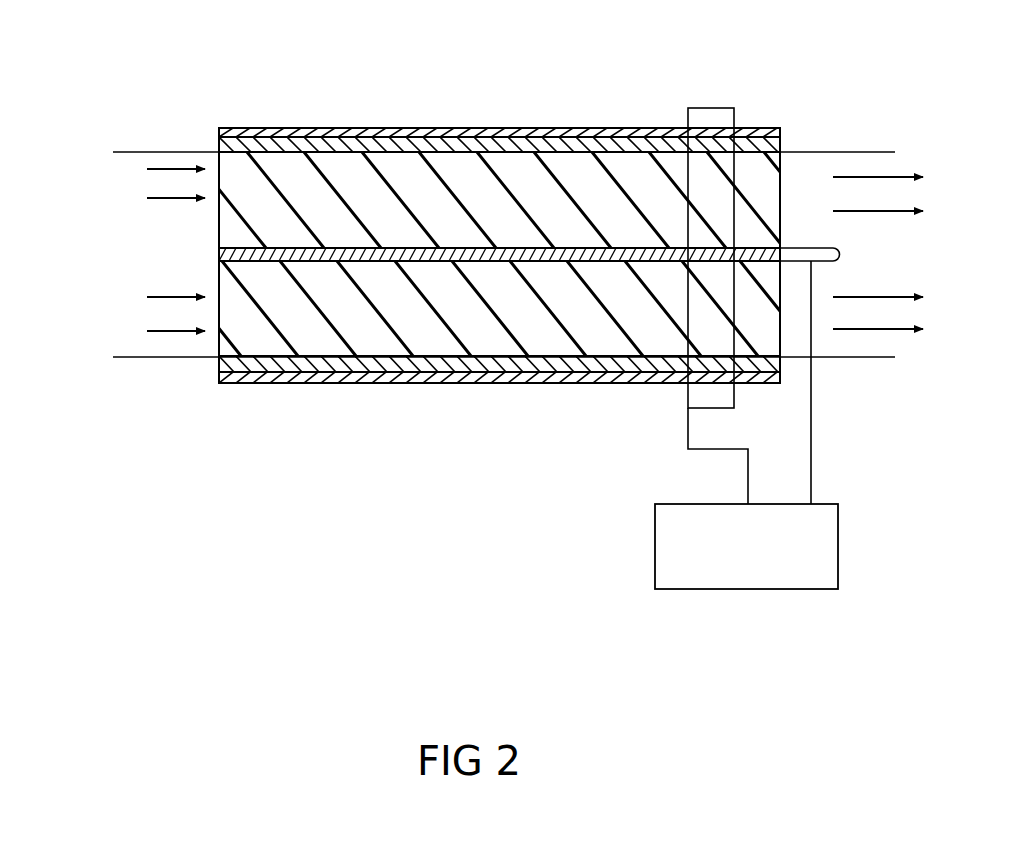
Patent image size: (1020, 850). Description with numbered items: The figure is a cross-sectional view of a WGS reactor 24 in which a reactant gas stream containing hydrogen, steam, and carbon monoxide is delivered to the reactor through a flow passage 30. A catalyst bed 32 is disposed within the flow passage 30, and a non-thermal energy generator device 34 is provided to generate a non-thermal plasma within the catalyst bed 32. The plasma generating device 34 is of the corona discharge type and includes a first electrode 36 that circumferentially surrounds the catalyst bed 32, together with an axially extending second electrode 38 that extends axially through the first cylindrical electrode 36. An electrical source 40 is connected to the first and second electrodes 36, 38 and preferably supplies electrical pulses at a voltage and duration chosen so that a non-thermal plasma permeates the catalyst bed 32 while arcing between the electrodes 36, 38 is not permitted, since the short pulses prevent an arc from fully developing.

The WGS reactor 24 is at (297, 177).
The flow passage 30 is at (122, 328).
The catalyst bed 32 is at (497, 340).
The non-thermal energy generator device 34 is at (606, 552).
The first electrode 36 is at (352, 383).
The second electrode 38 is at (553, 262).
The electrical source 40 is at (838, 550).